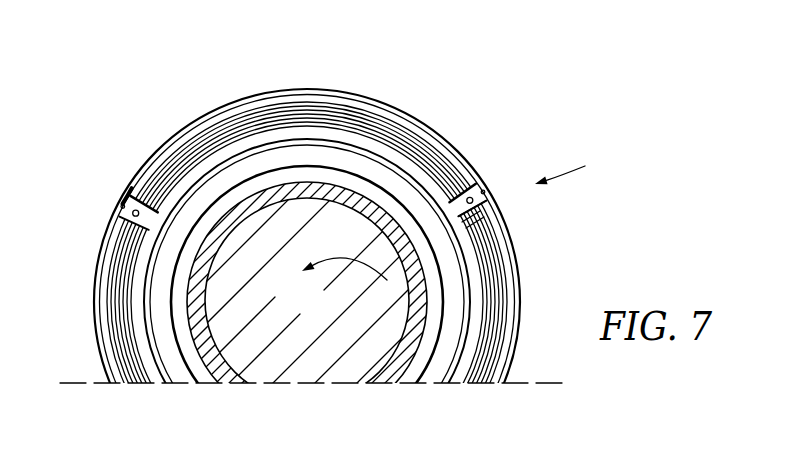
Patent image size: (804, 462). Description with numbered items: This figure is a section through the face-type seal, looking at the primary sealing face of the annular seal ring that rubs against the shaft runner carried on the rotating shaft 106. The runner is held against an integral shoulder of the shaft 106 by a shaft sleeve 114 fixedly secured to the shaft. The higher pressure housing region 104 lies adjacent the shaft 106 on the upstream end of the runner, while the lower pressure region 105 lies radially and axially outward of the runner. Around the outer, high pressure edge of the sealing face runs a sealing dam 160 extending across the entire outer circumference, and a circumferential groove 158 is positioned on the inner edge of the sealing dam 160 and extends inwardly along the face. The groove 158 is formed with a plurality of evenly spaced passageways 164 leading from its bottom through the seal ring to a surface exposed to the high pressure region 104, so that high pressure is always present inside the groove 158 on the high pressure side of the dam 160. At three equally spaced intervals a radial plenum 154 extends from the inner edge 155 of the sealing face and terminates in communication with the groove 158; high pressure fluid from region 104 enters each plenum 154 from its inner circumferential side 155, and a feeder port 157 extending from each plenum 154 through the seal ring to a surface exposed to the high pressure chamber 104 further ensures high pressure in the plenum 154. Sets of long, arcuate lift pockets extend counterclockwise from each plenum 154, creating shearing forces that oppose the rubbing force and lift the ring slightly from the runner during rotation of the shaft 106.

The higher pressure housing region 104 is at (470, 267).
The lower pressure region 105 is at (647, 170).
The rotating shaft 106 is at (320, 303).
The shaft sleeve 114 is at (400, 355).
The radial plenum 154 is at (485, 196).
The inner edge 155 is at (466, 243).
The feeder port 157 is at (129, 203).
The circumferential groove 158 is at (190, 130).
The sealing dam 160 is at (205, 114).
The passageways 164 is at (293, 92).